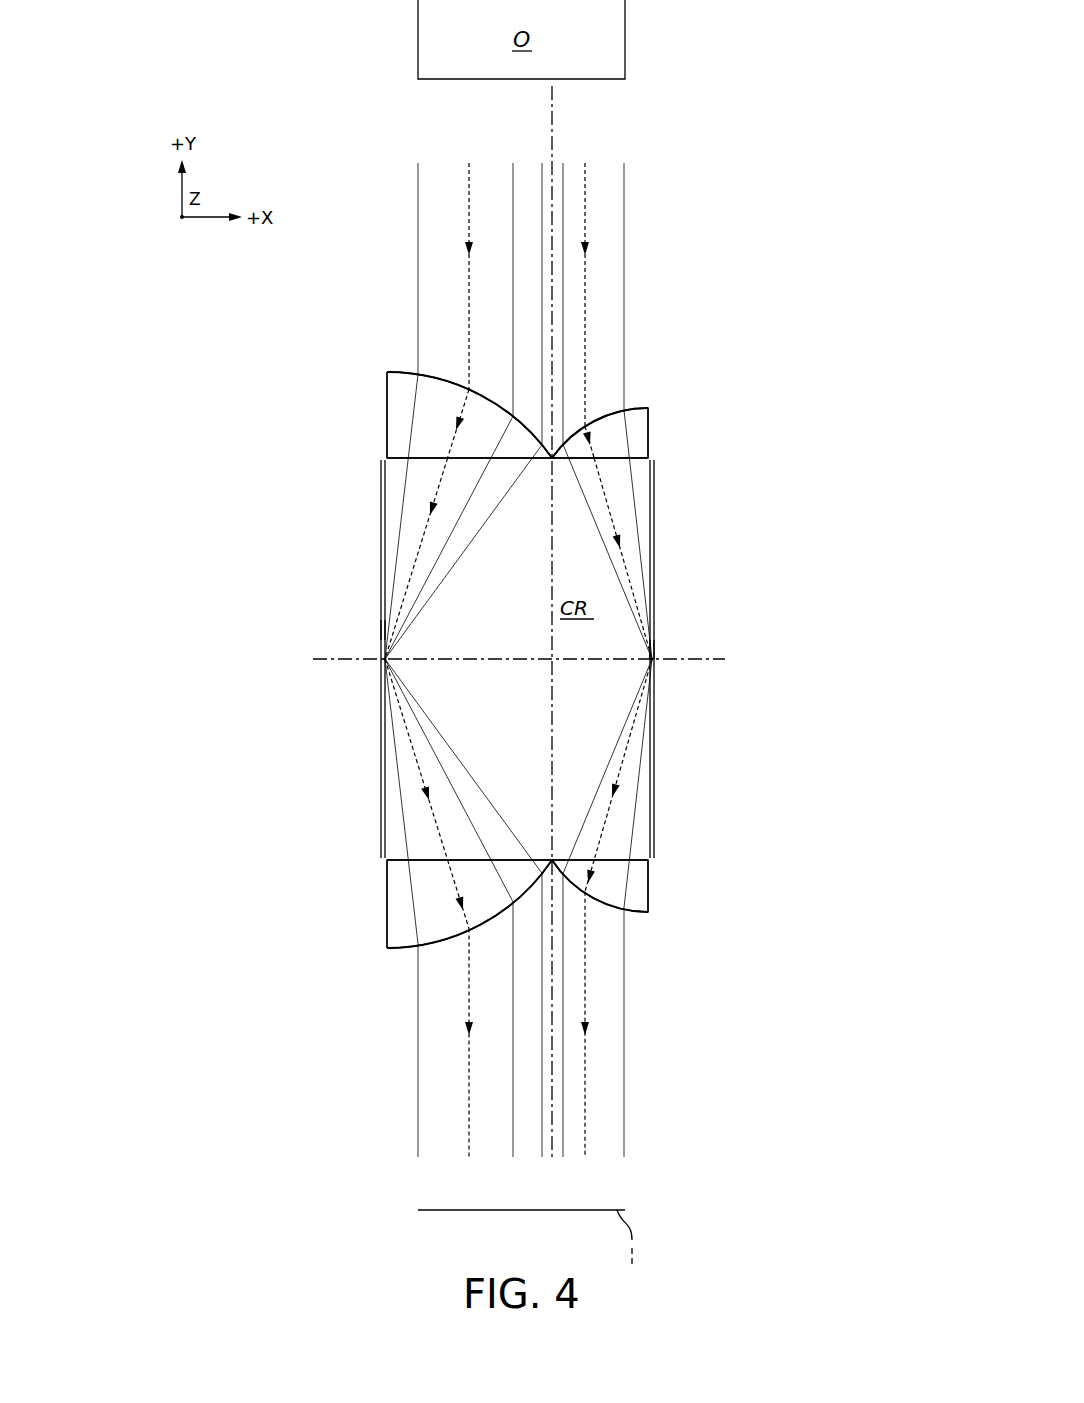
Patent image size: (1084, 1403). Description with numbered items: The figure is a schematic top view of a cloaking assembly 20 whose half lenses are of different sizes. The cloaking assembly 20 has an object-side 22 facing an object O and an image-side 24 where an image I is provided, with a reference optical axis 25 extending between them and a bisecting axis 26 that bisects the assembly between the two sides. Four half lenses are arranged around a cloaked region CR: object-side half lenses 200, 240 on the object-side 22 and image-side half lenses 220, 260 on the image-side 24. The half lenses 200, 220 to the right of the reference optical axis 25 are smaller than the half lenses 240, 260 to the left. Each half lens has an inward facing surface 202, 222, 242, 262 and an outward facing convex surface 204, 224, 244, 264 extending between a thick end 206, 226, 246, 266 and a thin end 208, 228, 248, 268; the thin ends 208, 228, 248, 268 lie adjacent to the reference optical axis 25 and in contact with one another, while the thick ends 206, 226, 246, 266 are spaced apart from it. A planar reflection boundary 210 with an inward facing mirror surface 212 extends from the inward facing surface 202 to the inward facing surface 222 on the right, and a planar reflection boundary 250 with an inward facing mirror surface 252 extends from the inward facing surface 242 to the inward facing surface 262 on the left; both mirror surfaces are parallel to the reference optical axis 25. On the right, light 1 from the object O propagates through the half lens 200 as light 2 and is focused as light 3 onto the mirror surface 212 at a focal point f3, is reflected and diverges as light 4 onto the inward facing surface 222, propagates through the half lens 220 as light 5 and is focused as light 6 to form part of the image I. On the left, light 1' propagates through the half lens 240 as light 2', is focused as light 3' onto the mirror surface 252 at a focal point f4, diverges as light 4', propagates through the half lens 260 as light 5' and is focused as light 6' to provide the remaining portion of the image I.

The cloaking assembly 20 is at (798, 182).
The object-side 22 is at (820, 250).
The image-side 24 is at (800, 767).
The reference optical axis 25 is at (554, 120).
The bisecting axis 26 is at (724, 661).
The object-side half lens 200 is at (722, 436).
The inward facing surface 202 is at (651, 458).
The outward facing convex surface 204 is at (614, 412).
The thick end 206 is at (650, 428).
The thin end 208 is at (558, 462).
The planar reflection boundary 210 is at (655, 645).
The inward facing mirror surface 212 is at (650, 690).
The image-side half lens 220 is at (773, 888).
The inward facing surface 222 is at (648, 850).
The outward facing convex surface 224 is at (648, 913).
The thick end 226 is at (650, 888).
The thin end 228 is at (567, 856).
The object-side half lens 240 is at (223, 402).
The inward facing surface 242 is at (383, 460).
The outward facing convex surface 244 is at (426, 374).
The thick end 246 is at (387, 416).
The thin end 248 is at (548, 462).
The planar reflection boundary 250 is at (381, 656).
The inward facing mirror surface 252 is at (388, 632).
The image-side half lens 260 is at (237, 898).
The inward facing surface 262 is at (387, 858).
The outward facing convex surface 264 is at (396, 951).
The thick end 266 is at (387, 915).
The thin end 268 is at (541, 858).
The light from the object 1 is at (598, 294).
The light propagating through the object-side half lens 2 is at (596, 417).
The light focused by the object-side half lens 3 is at (623, 558).
The light reflected by the mirror surface 4 is at (623, 759).
The light propagating through the image-side half lens 5 is at (599, 900).
The light focused by the image-side half lens 6 is at (597, 1024).
The light from the object 1' is at (459, 276).
The light propagating through the object-side half lens 2' is at (442, 423).
The light focused by the object-side half lens 3' is at (429, 558).
The light reflected by the mirror surface 4' is at (416, 759).
The light propagating through the image-side half lens 5' is at (450, 898).
The light focused by the image-side half lens 6' is at (456, 1043).
The focal point f3 is at (650, 660).
The focal point f4 is at (386, 659).